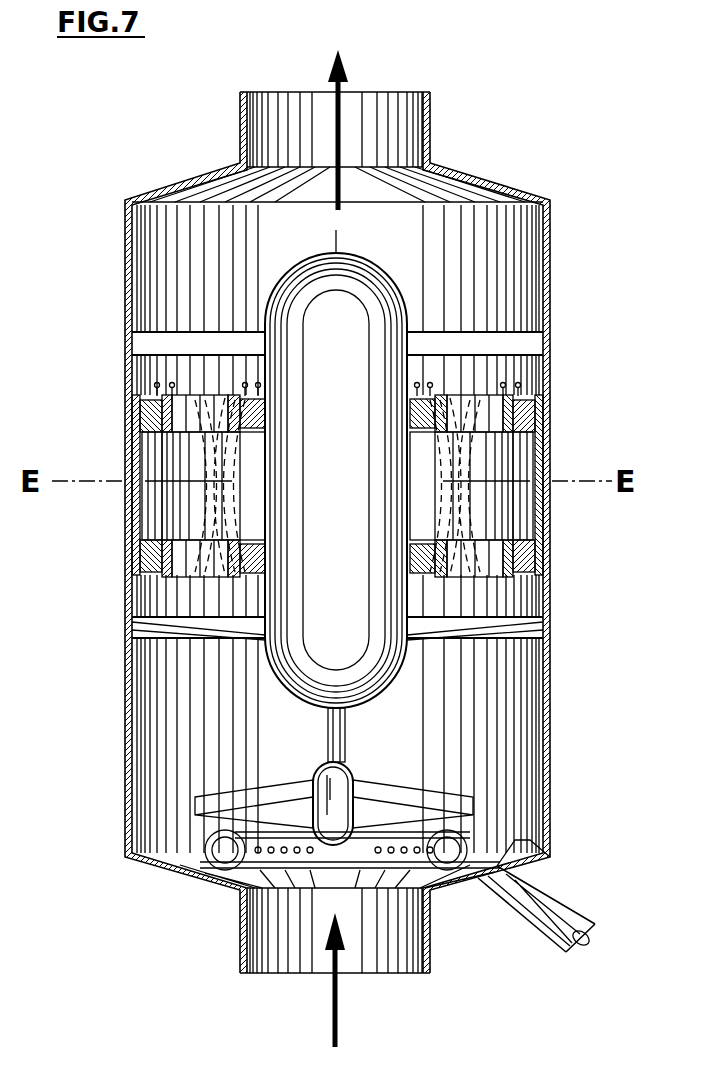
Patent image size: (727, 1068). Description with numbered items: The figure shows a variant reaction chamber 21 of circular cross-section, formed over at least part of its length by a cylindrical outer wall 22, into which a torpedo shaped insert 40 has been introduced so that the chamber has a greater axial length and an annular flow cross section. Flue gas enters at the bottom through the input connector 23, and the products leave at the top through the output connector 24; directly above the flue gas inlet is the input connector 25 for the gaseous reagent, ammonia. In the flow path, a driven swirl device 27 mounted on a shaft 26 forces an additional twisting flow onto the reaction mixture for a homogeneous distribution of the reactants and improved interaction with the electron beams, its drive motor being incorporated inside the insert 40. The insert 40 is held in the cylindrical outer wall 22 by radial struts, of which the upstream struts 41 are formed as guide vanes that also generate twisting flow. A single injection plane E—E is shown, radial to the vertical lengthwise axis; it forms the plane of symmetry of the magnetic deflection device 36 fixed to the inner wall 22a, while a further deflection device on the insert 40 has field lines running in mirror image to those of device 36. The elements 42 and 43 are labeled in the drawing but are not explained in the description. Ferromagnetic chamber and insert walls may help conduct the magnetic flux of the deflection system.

The reaction chamber 21 is at (540, 185).
The cylindrical outer wall 22 is at (553, 258).
The inner wall 22a is at (540, 238).
The input connector 23 is at (410, 936).
The output connector 24 is at (410, 122).
The input connector for the gaseous reagent 25 is at (232, 882).
The shaft 26 is at (346, 738).
The driven swirl device 27 is at (195, 805).
The magnetic deflection device 36 is at (527, 390).
The torpedo shaped insert 40 is at (347, 482).
The upstream struts 41 is at (133, 628).
The upper plate 42 is at (133, 346).
The annular channel 43 is at (431, 384).